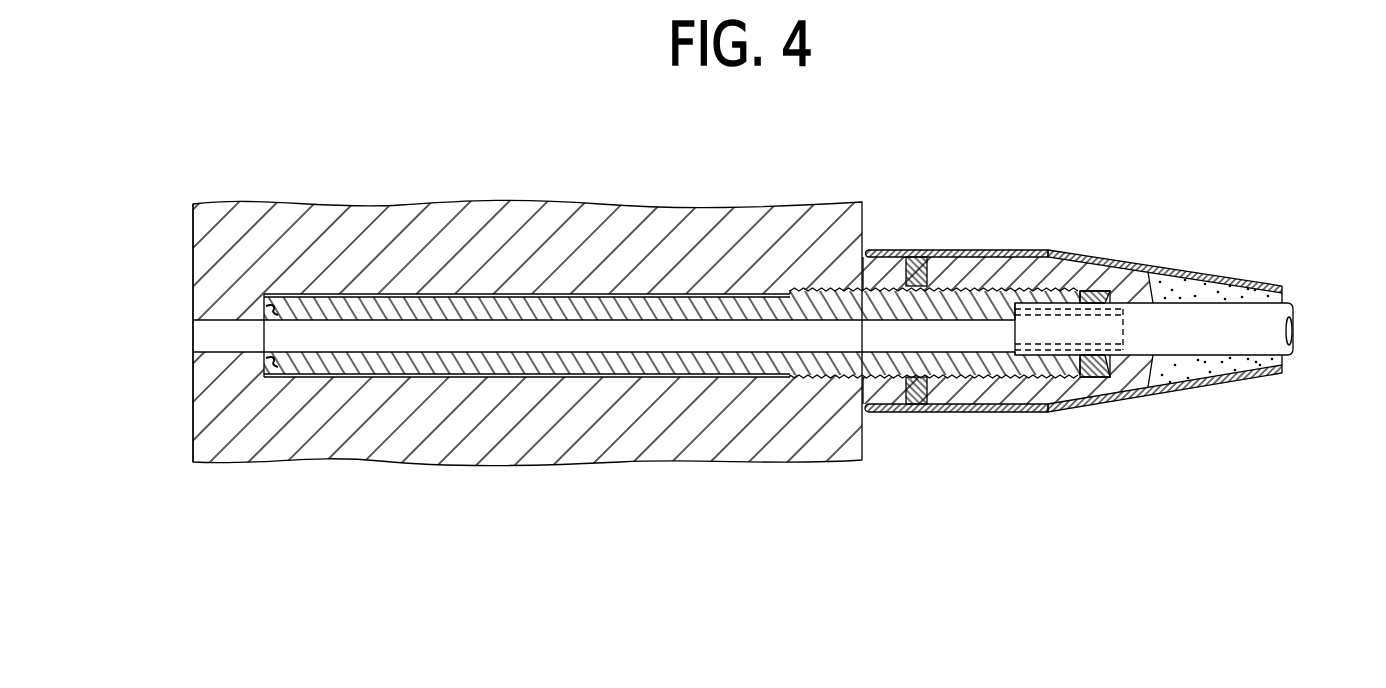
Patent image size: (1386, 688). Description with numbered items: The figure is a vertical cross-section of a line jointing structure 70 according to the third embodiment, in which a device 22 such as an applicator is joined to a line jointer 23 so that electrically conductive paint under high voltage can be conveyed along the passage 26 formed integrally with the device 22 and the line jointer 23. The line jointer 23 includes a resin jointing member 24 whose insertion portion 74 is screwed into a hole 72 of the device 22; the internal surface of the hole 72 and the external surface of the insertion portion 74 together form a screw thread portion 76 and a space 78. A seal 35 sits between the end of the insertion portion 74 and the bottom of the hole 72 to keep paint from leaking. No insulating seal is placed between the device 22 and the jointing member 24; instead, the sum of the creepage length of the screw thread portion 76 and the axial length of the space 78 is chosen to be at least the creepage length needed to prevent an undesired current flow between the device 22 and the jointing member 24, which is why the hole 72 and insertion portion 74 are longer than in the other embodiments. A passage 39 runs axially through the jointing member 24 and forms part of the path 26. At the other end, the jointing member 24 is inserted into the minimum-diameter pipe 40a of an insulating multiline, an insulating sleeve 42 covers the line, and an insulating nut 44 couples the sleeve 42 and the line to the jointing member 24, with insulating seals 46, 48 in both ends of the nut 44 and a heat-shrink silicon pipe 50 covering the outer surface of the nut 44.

The line jointing structure 70 is at (1087, 108).
The device 22 is at (709, 196).
The passage 26 is at (220, 322).
The passage 39 is at (353, 335).
The insertion portion 74 is at (599, 310).
The hole 72 is at (726, 372).
The space 78 is at (420, 378).
The seal 35 is at (265, 368).
The screw thread portion 76 is at (820, 378).
The jointing member 24 is at (972, 278).
The insulating nut 44 is at (1036, 392).
The insulating seal 48 is at (912, 257).
The insulating sleeve 42 is at (1097, 370).
The line jointer 23 is at (957, 428).
The pipe 50 is at (1205, 268).
The insulating seal 46 is at (1210, 366).
The pipe 40a is at (1280, 320).